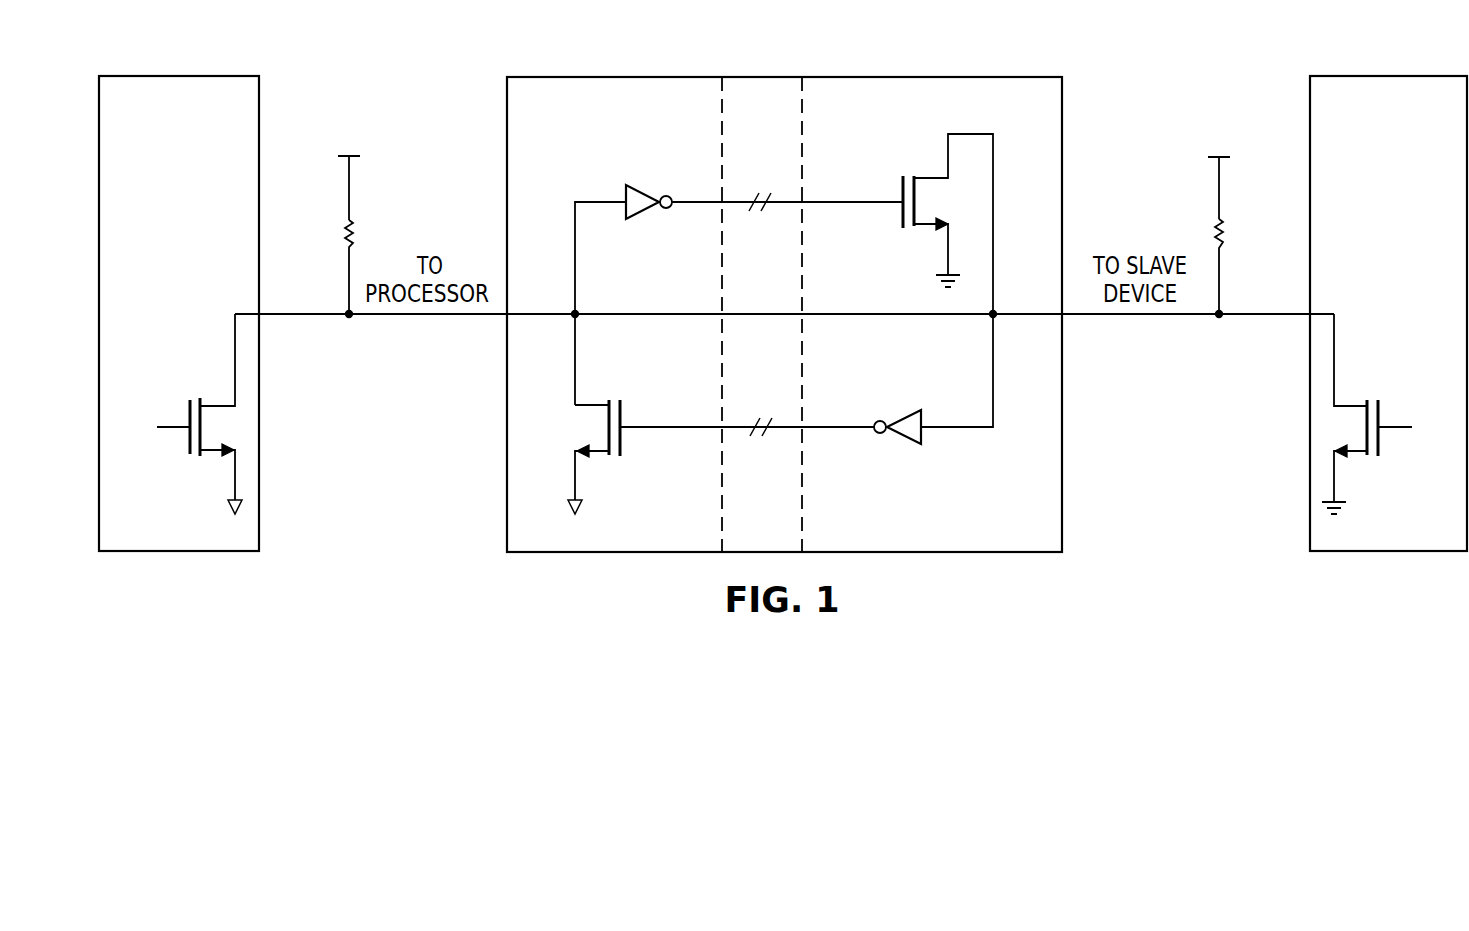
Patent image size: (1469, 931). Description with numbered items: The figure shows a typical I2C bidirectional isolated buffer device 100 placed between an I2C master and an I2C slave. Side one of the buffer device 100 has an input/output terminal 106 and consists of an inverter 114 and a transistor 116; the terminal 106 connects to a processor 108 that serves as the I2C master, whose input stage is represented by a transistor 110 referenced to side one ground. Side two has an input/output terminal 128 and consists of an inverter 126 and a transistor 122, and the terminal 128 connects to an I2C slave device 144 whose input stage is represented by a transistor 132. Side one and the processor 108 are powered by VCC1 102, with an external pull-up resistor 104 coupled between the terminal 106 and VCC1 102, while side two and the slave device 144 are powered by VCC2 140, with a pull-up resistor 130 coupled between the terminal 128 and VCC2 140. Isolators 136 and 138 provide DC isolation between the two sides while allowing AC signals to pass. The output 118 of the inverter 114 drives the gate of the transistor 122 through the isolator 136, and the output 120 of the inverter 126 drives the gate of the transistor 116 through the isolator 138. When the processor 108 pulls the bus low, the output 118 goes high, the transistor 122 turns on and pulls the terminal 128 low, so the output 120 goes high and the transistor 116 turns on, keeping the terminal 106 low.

The I2C bidirectional isolated buffer device 100 is at (866, 78).
The VCC1 102 is at (348, 191).
The pull-up resistor 104 is at (346, 236).
The input/output terminal 106 is at (553, 313).
The processor 108 is at (158, 283).
The transistor 110 is at (189, 418).
The inverter 114 is at (647, 188).
The transistor 116 is at (623, 418).
The output of inverter 114 118 is at (835, 203).
The output of inverter 126 120 is at (678, 429).
The transistor 122 is at (901, 191).
The inverter 126 is at (893, 436).
The input/output terminal 128 is at (1015, 313).
The pull-up resistor 130 is at (1222, 236).
The transistor 132 is at (1381, 418).
The isolator 136 is at (766, 194).
The isolator 138 is at (758, 436).
The VCC2 140 is at (1221, 191).
The I2C slave device 144 is at (1369, 270).